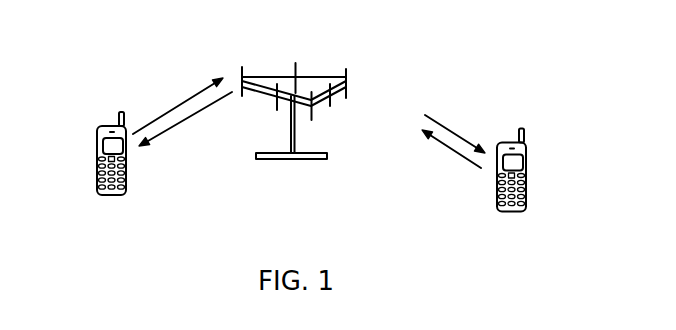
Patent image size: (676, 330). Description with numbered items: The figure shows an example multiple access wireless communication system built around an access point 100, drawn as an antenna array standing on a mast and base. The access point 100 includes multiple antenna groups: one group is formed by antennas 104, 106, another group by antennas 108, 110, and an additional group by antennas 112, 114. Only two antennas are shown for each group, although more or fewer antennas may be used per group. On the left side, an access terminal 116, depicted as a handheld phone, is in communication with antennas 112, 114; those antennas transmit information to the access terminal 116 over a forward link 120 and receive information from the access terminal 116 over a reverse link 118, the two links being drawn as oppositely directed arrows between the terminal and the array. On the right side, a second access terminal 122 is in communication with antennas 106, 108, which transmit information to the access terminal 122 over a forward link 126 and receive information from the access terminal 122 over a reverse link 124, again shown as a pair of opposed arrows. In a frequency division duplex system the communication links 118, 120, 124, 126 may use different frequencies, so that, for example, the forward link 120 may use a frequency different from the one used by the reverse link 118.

The access point 100 is at (298, 160).
The antenna 104 is at (313, 120).
The antenna 106 is at (332, 105).
The antenna 108 is at (349, 90).
The antenna 110 is at (296, 67).
The antenna 112 is at (242, 73).
The antenna 114 is at (277, 107).
The access terminal 116 is at (97, 142).
The reverse link 118 is at (185, 97).
The forward link 120 is at (176, 125).
The access terminal 122 is at (525, 162).
The reverse link 124 is at (458, 158).
The forward link 126 is at (452, 132).